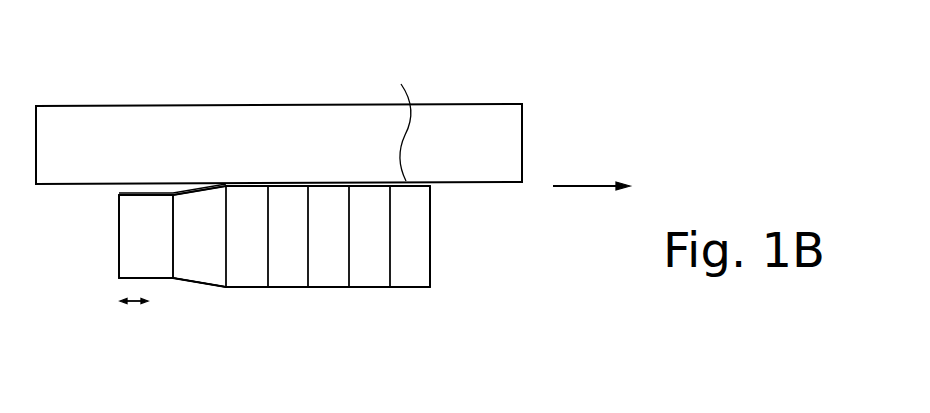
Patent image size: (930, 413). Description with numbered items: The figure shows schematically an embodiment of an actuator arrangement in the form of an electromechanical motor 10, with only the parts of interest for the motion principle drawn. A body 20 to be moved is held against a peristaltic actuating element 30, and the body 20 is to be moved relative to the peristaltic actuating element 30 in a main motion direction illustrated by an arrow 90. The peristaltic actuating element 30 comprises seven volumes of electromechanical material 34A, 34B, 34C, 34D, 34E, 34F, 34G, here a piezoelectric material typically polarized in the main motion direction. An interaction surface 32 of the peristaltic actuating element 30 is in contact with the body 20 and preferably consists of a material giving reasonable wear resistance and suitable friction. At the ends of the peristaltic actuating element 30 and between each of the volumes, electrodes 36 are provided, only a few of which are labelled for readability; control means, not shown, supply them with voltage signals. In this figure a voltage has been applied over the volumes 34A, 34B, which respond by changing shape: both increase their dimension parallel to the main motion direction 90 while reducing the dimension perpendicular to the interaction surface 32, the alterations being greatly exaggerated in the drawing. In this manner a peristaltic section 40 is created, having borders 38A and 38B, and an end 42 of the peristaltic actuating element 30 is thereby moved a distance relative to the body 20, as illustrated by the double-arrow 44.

The electromechanical motor 10 is at (559, 93).
The body 20 is at (133, 108).
The peristaltic actuating element 30 is at (465, 257).
The interaction surface 32 is at (397, 117).
The volume of electromechanical material 34A is at (130, 243).
The volume of electromechanical material 34B is at (183, 221).
The volume of electromechanical material 34C is at (242, 288).
The volume of electromechanical material 34D is at (288, 285).
The volume of electromechanical material 34E is at (322, 270).
The volume of electromechanical material 34F is at (376, 279).
The volume of electromechanical material 34G is at (408, 270).
The electrodes 36 is at (392, 203).
The border 38A is at (118, 277).
The border 38B is at (225, 270).
The peristaltic section 40 is at (165, 268).
The end 42 is at (117, 257).
The double-arrow 44 is at (132, 316).
The arrow 90 is at (591, 166).